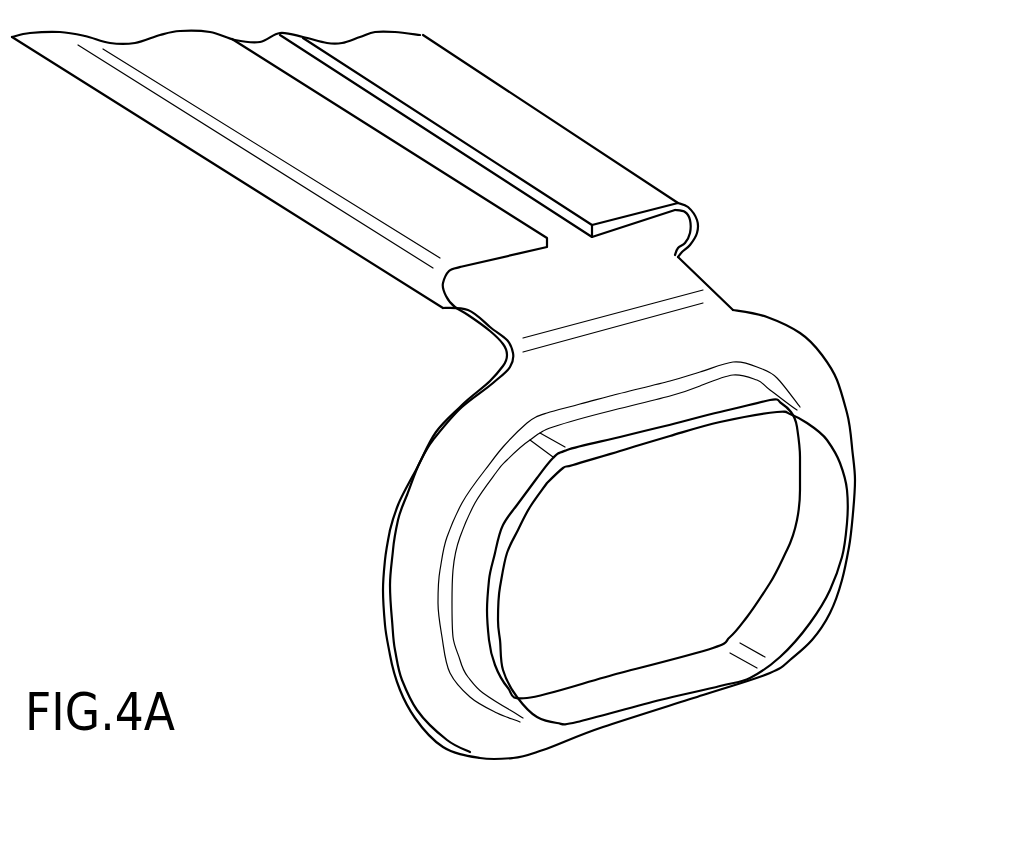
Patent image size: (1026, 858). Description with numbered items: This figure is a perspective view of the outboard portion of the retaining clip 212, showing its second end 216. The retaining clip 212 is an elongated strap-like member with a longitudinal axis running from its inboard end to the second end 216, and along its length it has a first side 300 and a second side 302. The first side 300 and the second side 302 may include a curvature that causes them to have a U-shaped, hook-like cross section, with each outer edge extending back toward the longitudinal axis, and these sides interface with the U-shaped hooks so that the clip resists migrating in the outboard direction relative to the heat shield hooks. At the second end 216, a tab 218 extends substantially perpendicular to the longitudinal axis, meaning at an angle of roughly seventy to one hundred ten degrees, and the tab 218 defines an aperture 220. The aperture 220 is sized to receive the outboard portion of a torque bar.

The retaining clip 212 is at (218, 208).
The first side 300 is at (392, 243).
The second side 302 is at (602, 152).
The second end 216 is at (717, 242).
The tab 218 is at (807, 353).
The aperture 220 is at (770, 573).